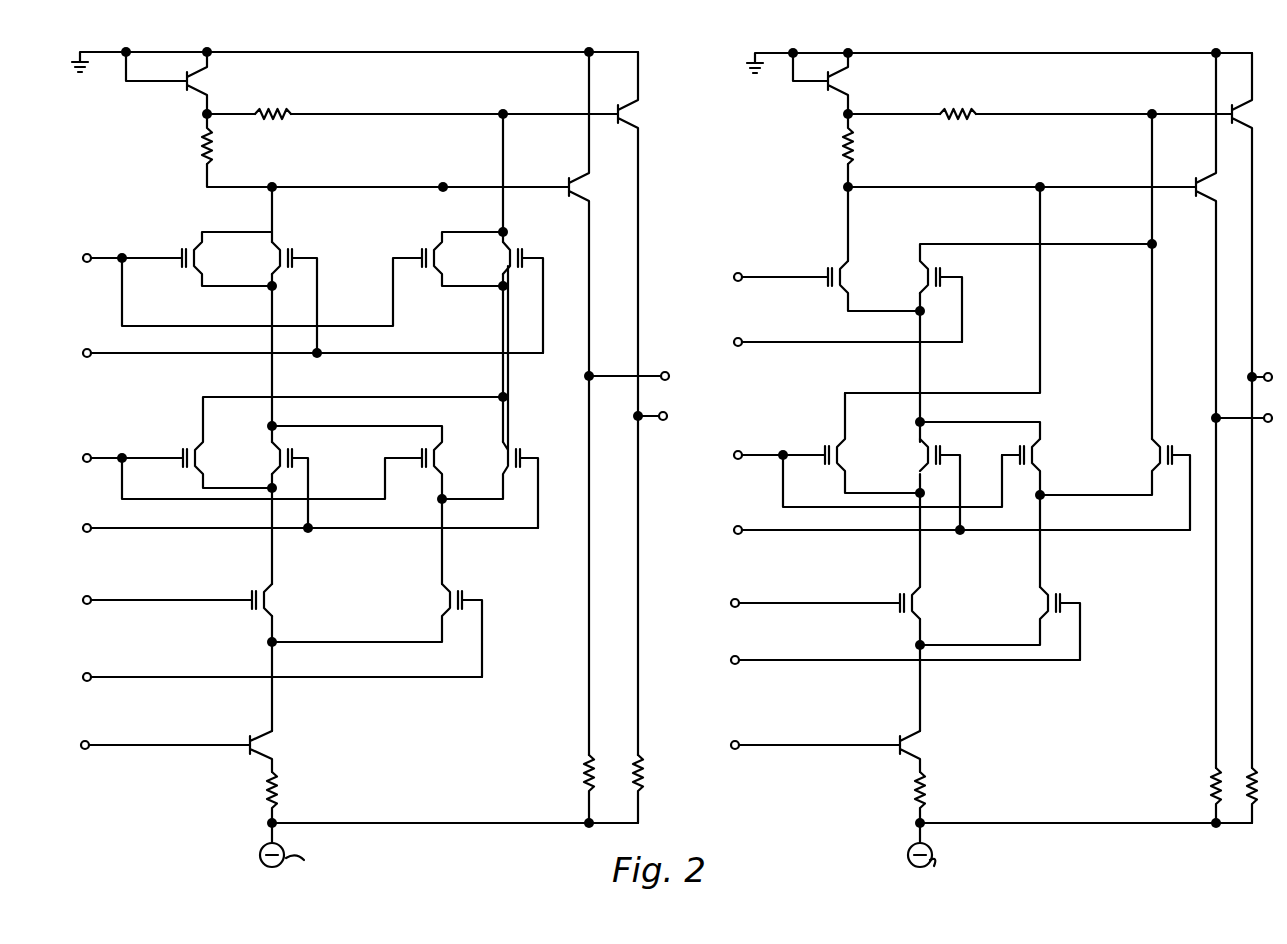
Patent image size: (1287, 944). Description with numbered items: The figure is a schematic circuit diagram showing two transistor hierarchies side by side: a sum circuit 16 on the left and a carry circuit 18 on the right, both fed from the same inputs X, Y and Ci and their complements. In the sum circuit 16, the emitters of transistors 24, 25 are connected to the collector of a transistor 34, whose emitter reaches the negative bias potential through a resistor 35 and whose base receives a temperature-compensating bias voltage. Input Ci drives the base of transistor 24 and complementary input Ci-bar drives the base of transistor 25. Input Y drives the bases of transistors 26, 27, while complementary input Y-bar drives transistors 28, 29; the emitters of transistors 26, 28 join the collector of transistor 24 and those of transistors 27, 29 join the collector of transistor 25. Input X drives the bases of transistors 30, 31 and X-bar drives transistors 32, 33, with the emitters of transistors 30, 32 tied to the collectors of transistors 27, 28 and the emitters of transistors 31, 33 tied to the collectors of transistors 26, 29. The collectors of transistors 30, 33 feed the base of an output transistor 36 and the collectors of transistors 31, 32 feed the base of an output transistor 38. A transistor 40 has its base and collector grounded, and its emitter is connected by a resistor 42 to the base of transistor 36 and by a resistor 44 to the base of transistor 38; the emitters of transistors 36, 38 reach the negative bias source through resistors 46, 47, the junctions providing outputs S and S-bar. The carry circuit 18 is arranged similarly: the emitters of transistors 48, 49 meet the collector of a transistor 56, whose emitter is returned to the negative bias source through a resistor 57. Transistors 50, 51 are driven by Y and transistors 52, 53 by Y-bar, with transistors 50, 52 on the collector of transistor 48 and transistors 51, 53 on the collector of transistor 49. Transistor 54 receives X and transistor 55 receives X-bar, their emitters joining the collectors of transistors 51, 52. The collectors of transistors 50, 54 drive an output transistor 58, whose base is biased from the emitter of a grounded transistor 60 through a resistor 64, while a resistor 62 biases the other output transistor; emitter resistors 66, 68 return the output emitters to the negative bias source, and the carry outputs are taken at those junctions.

The sum circuit 16 is at (366, 44).
The carry circuit 18 is at (974, 42).
The transistor 24 is at (264, 598).
The transistor 25 is at (436, 602).
The transistor 26 is at (200, 452).
The transistor 27 is at (436, 452).
The transistor 28 is at (270, 458).
The transistor 29 is at (500, 458).
The transistor 30 is at (200, 254).
The transistor 31 is at (438, 254).
The transistor 32 is at (272, 258).
The transistor 33 is at (500, 258).
The transistor 34 is at (280, 748).
The resistor 35 is at (280, 792).
The output transistor 36 is at (640, 118).
The output transistor 38 is at (586, 192).
The transistor 40 is at (210, 84).
The resistor 42 is at (286, 112).
The resistor 44 is at (200, 152).
The resistor 46 is at (630, 768).
The resistor 47 is at (582, 772).
The transistor 48 is at (912, 598).
The transistor 49 is at (1036, 602).
The transistor 50 is at (840, 448).
The transistor 51 is at (1040, 452).
The transistor 52 is at (918, 456).
The transistor 53 is at (1150, 458).
The transistor 54 is at (844, 270).
The transistor 55 is at (918, 278).
The transistor 56 is at (1248, 128).
The resistor 57 is at (924, 794).
The output transistor 58 is at (1220, 190).
The transistor 60 is at (848, 86).
The resistor 62 is at (968, 112).
The resistor 64 is at (842, 150).
The resistor 66 is at (1212, 792).
The resistor 68 is at (1246, 770).